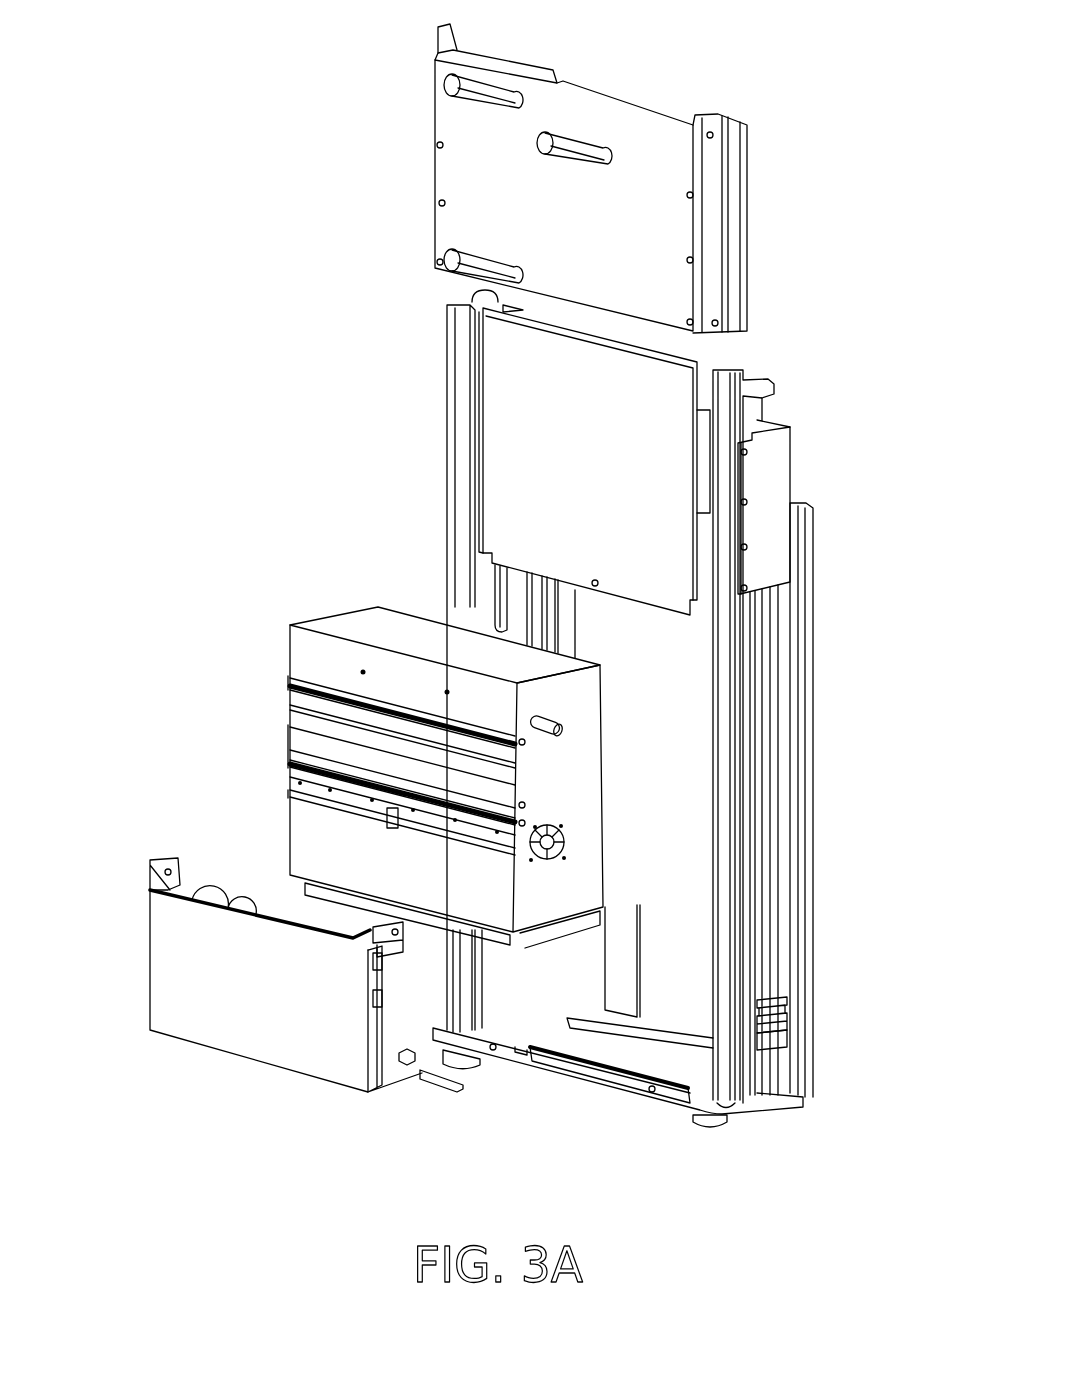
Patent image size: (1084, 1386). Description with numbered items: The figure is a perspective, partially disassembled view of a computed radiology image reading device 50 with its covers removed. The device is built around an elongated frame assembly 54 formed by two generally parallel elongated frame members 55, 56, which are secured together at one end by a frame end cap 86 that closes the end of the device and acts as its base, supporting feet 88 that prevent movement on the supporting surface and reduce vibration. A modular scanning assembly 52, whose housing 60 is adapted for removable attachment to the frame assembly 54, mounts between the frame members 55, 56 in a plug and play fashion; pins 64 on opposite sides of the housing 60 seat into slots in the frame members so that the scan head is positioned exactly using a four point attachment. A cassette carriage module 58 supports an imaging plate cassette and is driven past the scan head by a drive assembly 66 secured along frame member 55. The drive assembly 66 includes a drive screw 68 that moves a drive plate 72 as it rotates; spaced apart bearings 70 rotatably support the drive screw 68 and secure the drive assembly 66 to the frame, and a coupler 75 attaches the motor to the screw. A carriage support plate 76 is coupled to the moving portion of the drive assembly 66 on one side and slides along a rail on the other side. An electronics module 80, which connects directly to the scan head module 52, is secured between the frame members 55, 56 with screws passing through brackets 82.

The image reading device 50 is at (222, 42).
The modular scanning assembly 52 is at (313, 648).
The frame assembly 54 is at (828, 676).
The frame member 55 is at (792, 635).
The frame member 56 is at (450, 427).
The cassette carriage module 58 is at (581, 225).
The housing 60 is at (406, 877).
The pin 64 is at (548, 738).
The drive assembly 66 is at (768, 540).
The drive means 68 is at (762, 877).
The bearing 70 is at (789, 1040).
The drive plate 72 is at (775, 468).
The coupler 75 is at (782, 1012).
The carriage support plate 76 is at (601, 475).
The electronics module 80 is at (263, 1002).
The bracket 82 is at (162, 862).
The frame end cap 86 is at (619, 1082).
The feet 88 is at (712, 1134).